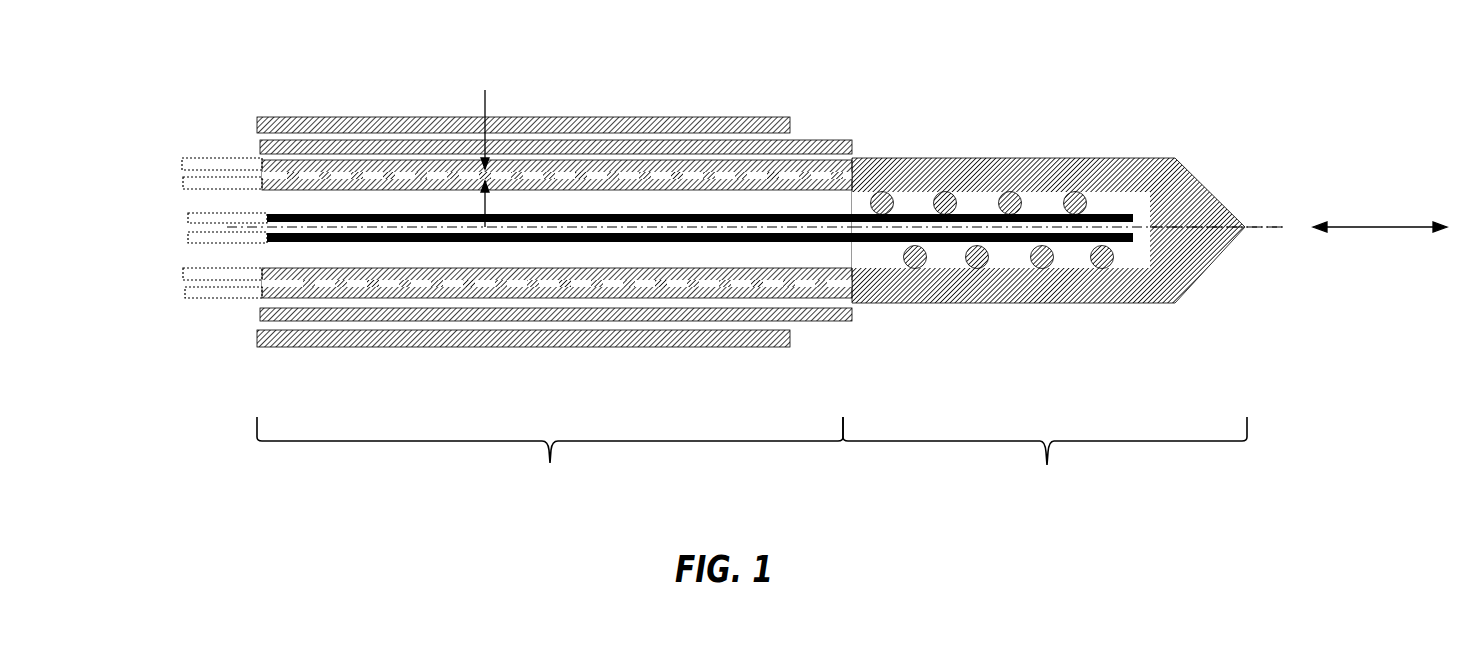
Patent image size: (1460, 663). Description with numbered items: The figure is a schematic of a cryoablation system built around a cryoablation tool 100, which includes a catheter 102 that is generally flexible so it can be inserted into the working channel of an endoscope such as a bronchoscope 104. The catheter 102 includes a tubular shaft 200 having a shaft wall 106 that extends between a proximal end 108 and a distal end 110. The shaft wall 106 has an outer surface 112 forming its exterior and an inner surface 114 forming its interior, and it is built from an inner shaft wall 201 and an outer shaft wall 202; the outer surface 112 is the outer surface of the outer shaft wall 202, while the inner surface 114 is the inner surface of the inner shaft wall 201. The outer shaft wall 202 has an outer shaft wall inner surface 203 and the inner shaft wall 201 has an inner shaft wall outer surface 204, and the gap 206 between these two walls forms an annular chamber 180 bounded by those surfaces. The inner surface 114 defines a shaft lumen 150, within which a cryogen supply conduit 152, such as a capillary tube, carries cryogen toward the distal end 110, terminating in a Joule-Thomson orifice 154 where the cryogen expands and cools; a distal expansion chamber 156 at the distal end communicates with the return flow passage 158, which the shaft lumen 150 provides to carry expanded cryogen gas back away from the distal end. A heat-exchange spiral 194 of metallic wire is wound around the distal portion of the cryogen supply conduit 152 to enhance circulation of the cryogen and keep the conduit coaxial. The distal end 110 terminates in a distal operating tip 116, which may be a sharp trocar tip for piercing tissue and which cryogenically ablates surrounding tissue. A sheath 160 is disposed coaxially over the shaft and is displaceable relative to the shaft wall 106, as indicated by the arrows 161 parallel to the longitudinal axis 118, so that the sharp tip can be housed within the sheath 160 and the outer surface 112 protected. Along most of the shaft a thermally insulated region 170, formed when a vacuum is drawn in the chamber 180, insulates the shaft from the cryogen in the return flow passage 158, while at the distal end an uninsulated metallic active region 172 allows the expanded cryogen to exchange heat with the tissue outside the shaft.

The cryoablation tool 100 is at (813, 128).
The catheter 102 is at (860, 157).
The bronchoscope 104 is at (332, 124).
The shaft wall 106 is at (282, 280).
The proximal end 108 is at (495, 149).
The distal end 110 is at (1157, 128).
The outer surface 112 is at (692, 165).
The inner surface 114 is at (670, 187).
The distal operating tip 116 is at (1058, 299).
The longitudinal axis 118 is at (1257, 230).
The shaft lumen 150 is at (275, 197).
The cryogen supply conduit 152 is at (382, 241).
The Joule-Thomson orifice 154 is at (1133, 243).
The distal expansion chamber 156 is at (1137, 247).
The return flow passage 158 is at (522, 250).
The sheath 160 is at (552, 140).
The arrows 161 is at (1397, 222).
The thermally insulated region 170 is at (490, 443).
The active region 172 is at (1200, 443).
The chamber 180 is at (767, 172).
The heat-exchange spiral 194 is at (1075, 191).
The tubular shaft 200 is at (170, 285).
The inner shaft wall 201 is at (183, 272).
The outer shaft wall 202 is at (185, 292).
The outer shaft wall inner surface 203 is at (188, 177).
The inner shaft wall outer surface 204 is at (183, 168).
The gap 206 is at (485, 108).